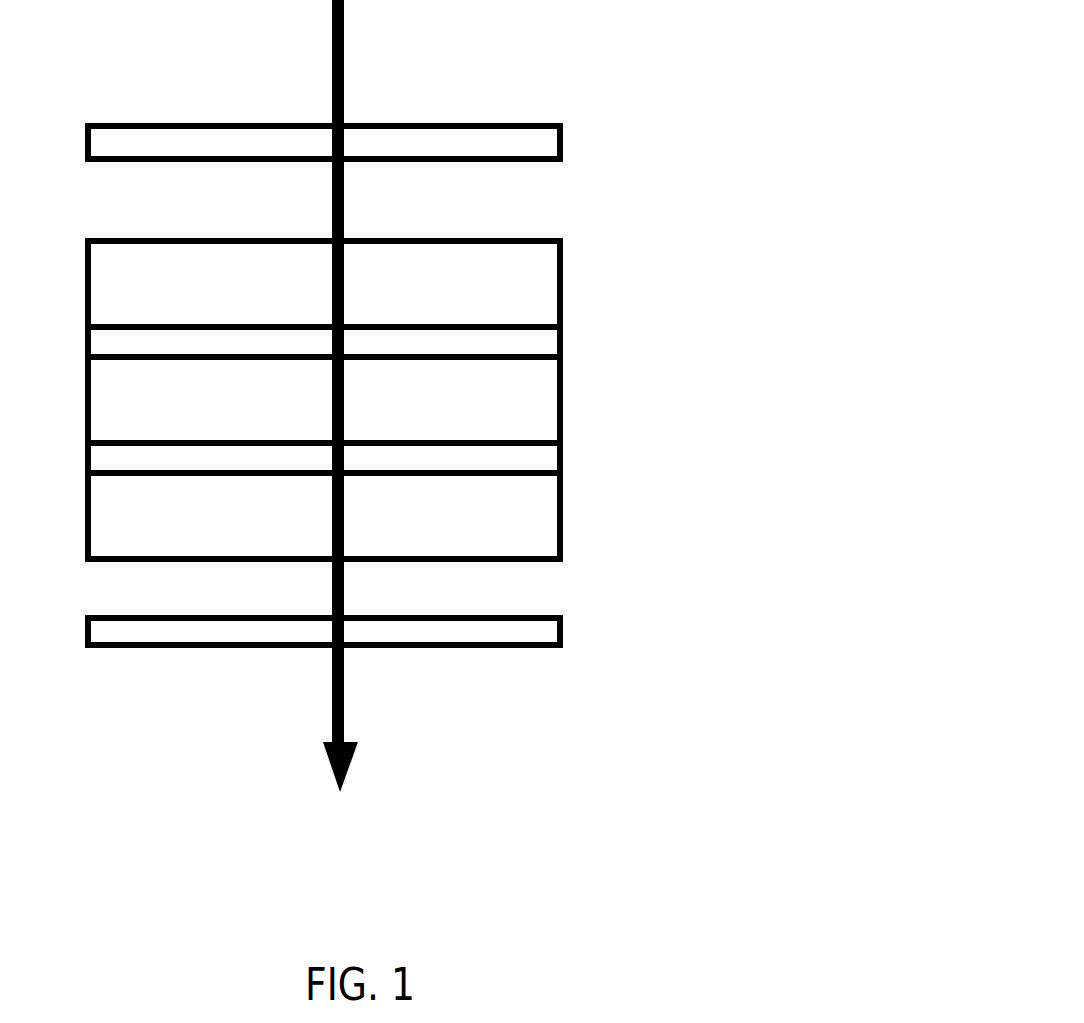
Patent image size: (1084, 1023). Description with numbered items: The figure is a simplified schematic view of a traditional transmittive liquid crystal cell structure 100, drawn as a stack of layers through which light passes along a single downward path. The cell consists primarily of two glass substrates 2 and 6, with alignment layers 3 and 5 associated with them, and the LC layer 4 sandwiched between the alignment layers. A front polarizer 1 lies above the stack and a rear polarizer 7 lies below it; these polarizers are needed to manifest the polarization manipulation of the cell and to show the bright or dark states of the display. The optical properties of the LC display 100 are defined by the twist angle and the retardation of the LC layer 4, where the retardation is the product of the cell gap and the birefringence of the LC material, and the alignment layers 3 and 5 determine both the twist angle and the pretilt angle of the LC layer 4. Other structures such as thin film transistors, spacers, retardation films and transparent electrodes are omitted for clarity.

The liquid crystal cell structure 100 is at (522, 396).
The front polarizer 1 is at (566, 133).
The glass substrate 2 is at (540, 265).
The alignment layer 3 is at (548, 343).
The LC layer 4 is at (547, 405).
The alignment layer 5 is at (550, 460).
The glass substrate 6 is at (550, 528).
The rear polarizer 7 is at (553, 632).